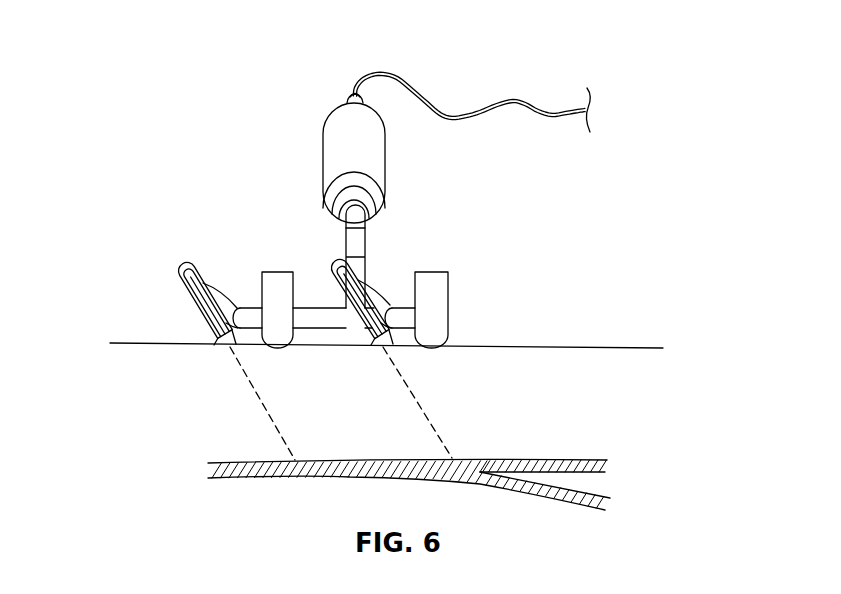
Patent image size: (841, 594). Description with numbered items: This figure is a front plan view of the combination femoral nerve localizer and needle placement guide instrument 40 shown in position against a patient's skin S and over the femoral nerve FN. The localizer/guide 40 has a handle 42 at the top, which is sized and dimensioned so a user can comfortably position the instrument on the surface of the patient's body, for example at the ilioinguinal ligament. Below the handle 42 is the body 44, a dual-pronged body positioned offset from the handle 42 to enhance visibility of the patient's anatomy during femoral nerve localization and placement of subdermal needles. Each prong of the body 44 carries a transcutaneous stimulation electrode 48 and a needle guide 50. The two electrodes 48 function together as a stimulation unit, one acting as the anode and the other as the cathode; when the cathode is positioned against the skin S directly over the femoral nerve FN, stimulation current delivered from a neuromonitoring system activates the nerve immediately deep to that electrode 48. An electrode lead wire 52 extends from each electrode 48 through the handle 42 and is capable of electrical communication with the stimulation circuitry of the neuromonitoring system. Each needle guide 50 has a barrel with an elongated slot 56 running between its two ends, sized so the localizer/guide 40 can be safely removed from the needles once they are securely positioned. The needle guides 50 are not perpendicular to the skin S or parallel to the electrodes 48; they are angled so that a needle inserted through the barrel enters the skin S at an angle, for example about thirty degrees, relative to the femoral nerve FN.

The combination femoral nerve localizer and needle placement guide instrument 40 is at (191, 135).
The handle 42 is at (375, 162).
The body 44 is at (238, 289).
The transcutaneous stimulation electrode 48 is at (290, 328).
The needle guide 50 is at (178, 266).
The electrode lead wire 52 is at (515, 100).
The slot 56 is at (213, 327).
The skin S is at (555, 347).
The femoral nerve FN is at (603, 490).